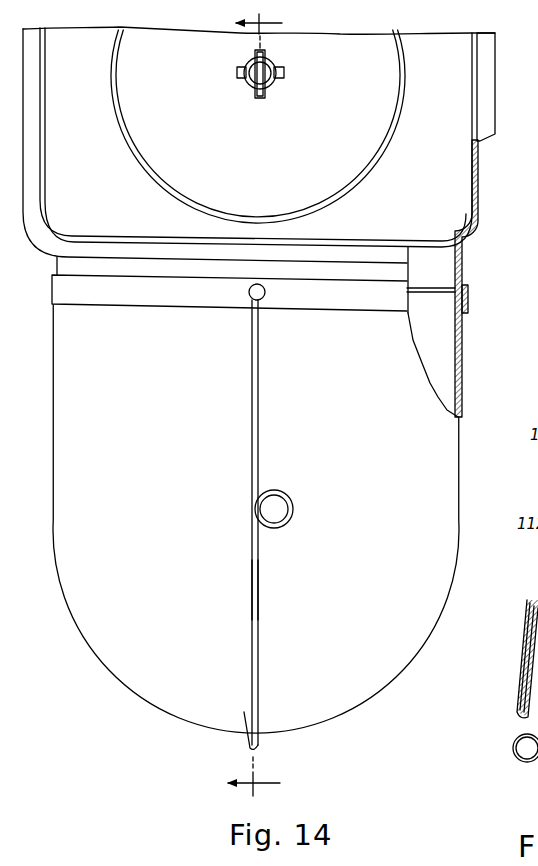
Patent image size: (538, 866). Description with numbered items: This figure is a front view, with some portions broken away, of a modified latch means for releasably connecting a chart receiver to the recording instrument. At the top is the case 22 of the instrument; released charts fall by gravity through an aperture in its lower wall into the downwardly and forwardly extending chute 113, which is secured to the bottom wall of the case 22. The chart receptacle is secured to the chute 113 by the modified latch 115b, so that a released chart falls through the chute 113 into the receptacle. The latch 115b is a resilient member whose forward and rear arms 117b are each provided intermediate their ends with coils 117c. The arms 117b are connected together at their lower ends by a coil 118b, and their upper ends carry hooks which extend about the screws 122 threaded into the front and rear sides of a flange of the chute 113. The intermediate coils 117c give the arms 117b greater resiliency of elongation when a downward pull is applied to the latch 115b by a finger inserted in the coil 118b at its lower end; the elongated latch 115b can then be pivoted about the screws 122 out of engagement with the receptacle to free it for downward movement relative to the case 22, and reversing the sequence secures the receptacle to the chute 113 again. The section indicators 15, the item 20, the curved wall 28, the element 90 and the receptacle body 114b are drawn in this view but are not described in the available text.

The section line 15- 15 is at (268, 405).
The fastener plate 20 is at (272, 94).
The case 22 is at (485, 70).
The curved inner wall 28 is at (378, 166).
The ring washer 90 is at (255, 86).
The chute 113 is at (463, 263).
The body plate 114b is at (413, 698).
The latch 115b is at (246, 590).
The forward and rear arms 117b is at (315, 411).
The intermediate coils 117c is at (344, 516).
The coil 118b is at (301, 753).
The screws 122 is at (262, 301).